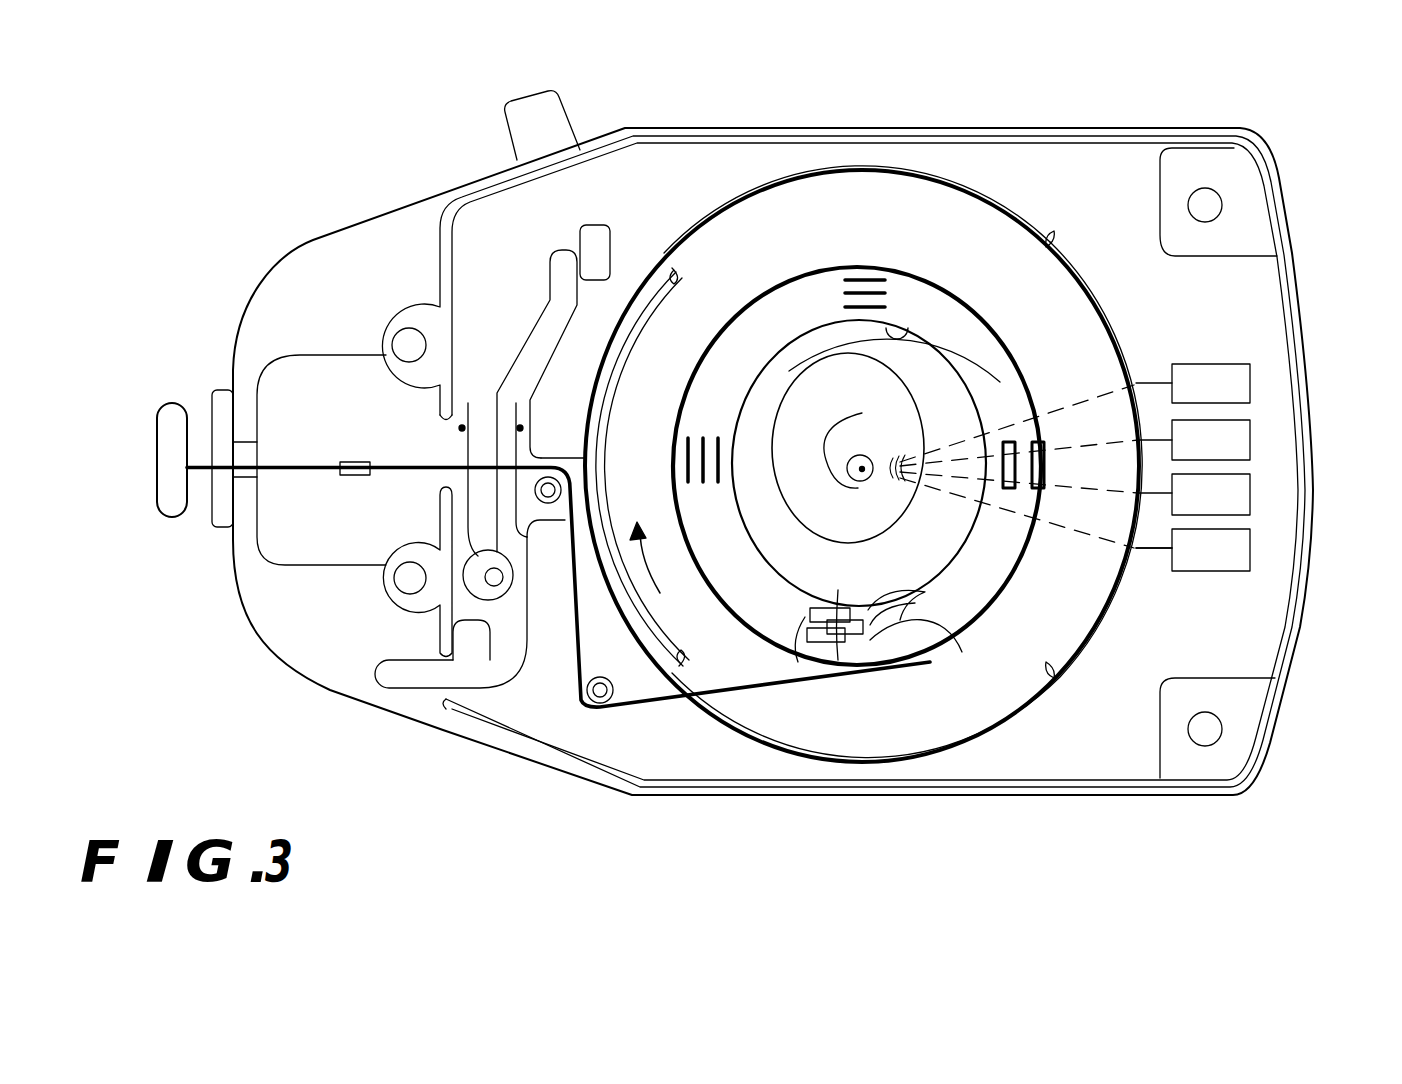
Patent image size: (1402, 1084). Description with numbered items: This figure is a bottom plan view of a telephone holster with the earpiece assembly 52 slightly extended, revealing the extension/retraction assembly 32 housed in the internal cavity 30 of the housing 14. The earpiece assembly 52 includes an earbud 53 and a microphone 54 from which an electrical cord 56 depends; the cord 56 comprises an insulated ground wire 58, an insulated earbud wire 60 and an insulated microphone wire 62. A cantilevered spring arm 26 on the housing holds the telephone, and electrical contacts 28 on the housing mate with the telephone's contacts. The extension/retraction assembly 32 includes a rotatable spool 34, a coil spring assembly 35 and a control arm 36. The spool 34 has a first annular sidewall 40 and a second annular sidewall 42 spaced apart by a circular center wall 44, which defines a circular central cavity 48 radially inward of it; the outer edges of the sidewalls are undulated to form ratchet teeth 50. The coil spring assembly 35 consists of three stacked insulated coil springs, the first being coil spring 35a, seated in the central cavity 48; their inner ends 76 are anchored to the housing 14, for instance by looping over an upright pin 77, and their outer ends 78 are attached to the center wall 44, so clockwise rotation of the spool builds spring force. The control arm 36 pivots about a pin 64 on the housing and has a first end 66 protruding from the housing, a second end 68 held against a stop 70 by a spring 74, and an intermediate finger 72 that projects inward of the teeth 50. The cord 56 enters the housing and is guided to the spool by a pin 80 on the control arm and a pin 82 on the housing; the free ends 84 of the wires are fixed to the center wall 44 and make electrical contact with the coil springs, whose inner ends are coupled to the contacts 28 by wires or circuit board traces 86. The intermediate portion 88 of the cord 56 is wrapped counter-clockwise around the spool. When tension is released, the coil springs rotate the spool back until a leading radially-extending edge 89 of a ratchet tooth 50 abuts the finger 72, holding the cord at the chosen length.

The housing 14 is at (1087, 130).
The cantilevered spring arm 26 is at (225, 395).
The electrical contacts 28 is at (1258, 440).
The internal cavity 30 is at (1217, 688).
The extension/retraction assembly 32 is at (1246, 323).
The rotatable spool 34 is at (1103, 311).
The coil spring assembly 35 is at (982, 363).
The coil spring 35a is at (810, 370).
The control arm 36 is at (535, 345).
The first annular sidewall 40 is at (762, 203).
The second annular sidewall 42 is at (996, 708).
The circular center wall 44 is at (900, 332).
The circular central cavity 48 is at (760, 568).
The ratchet teeth 50 is at (703, 232).
The earpiece assembly 52 is at (336, 537).
The earbud 53 is at (157, 462).
The microphone 54 is at (355, 462).
The electrical cord 56 is at (290, 462).
The insulated ground wire 58 is at (836, 614).
The insulated earbud wire 60 is at (800, 655).
The insulated microphone wire 62 is at (840, 655).
The pin 64 is at (500, 582).
The first end 66 is at (385, 672).
The second end 68 is at (555, 265).
The stop 70 is at (595, 235).
The intermediate finger 72 is at (582, 476).
The spring 74 is at (516, 540).
The inner ends 76 is at (856, 489).
The upright pin 77 is at (860, 456).
The outer ends 78 is at (922, 598).
The pin 80 is at (549, 478).
The pin 82 is at (604, 708).
The free ends 84 is at (927, 654).
The wires or circuit board traces 86 is at (1147, 552).
The intermediate portion 88 is at (697, 362).
The leading radially-extending edge 89 is at (674, 274).